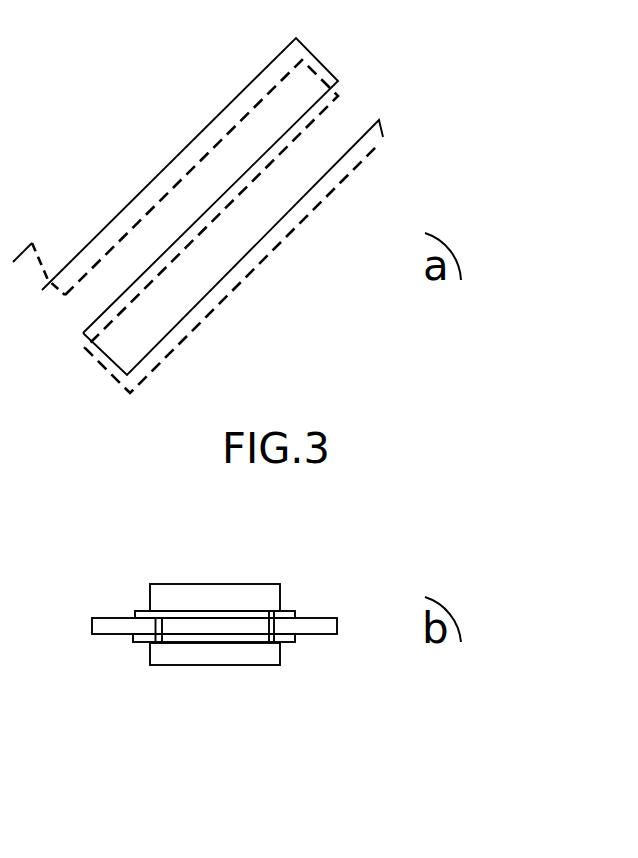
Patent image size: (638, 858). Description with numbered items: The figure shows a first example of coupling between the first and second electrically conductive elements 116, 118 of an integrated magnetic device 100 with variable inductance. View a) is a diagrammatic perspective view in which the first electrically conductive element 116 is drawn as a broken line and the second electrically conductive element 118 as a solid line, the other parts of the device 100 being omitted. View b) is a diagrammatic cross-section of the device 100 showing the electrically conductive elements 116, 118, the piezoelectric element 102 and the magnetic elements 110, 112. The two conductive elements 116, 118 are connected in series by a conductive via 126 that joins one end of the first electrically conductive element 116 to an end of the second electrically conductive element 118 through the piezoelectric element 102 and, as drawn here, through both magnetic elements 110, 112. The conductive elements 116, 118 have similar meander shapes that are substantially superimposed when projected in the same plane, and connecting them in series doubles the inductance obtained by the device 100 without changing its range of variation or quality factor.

The device 100 is at (392, 568).
The piezoelectric element 102 is at (105, 628).
The magnetic element 110 is at (293, 638).
The magnetic element 112 is at (137, 612).
The first electrically conductive element 116 is at (243, 281).
The second electrically conductive element 118 is at (163, 168).
The conductive via 126 is at (382, 131).